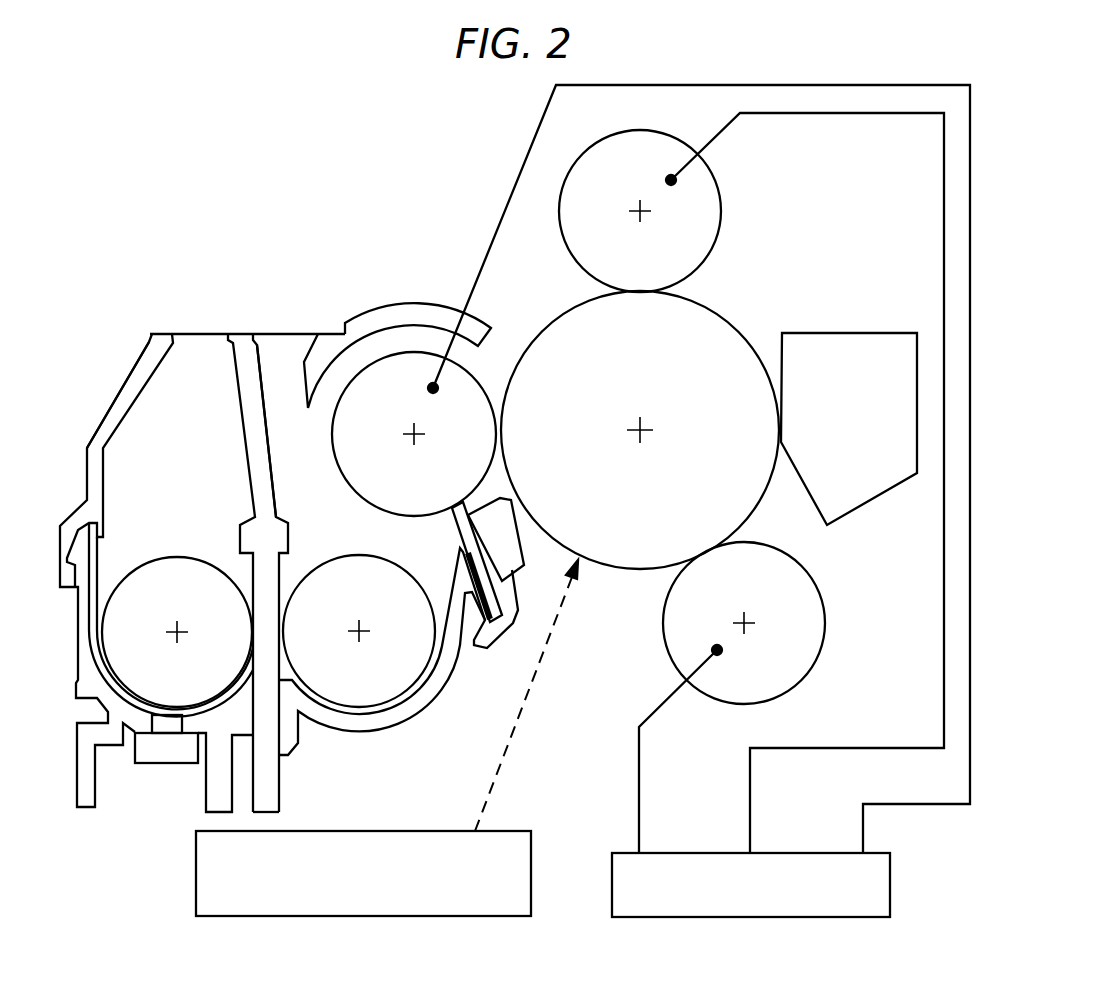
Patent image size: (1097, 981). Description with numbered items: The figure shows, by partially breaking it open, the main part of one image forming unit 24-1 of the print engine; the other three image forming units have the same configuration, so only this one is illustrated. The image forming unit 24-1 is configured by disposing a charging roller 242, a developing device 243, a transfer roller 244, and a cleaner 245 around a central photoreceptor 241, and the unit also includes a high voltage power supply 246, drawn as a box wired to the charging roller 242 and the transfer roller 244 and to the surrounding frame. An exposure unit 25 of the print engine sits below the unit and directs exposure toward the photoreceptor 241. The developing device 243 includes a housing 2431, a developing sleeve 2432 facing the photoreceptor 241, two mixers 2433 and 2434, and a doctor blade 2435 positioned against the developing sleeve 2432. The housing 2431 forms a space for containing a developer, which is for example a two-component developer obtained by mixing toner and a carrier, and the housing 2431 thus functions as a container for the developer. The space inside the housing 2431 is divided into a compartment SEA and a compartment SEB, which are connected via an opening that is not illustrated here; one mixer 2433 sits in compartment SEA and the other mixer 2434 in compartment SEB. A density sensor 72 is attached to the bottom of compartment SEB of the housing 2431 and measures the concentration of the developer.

The image forming unit 24-1 is at (354, 184).
The developing device 243 is at (289, 513).
The housing 2431 is at (408, 724).
The developing sleeve 2432 is at (397, 356).
The mixer 2433 is at (336, 555).
The mixer 2434 is at (182, 557).
The doctor blade 2435 is at (454, 531).
The photoreceptor 241 is at (726, 320).
The charging roller 242 is at (812, 678).
The transfer roller 244 is at (724, 185).
The cleaner 245 is at (864, 333).
The high voltage power supply 246 is at (782, 853).
The exposure unit 25 is at (196, 876).
The density sensor 72 is at (156, 764).
The compartment SEA is at (281, 363).
The compartment SEB is at (203, 363).